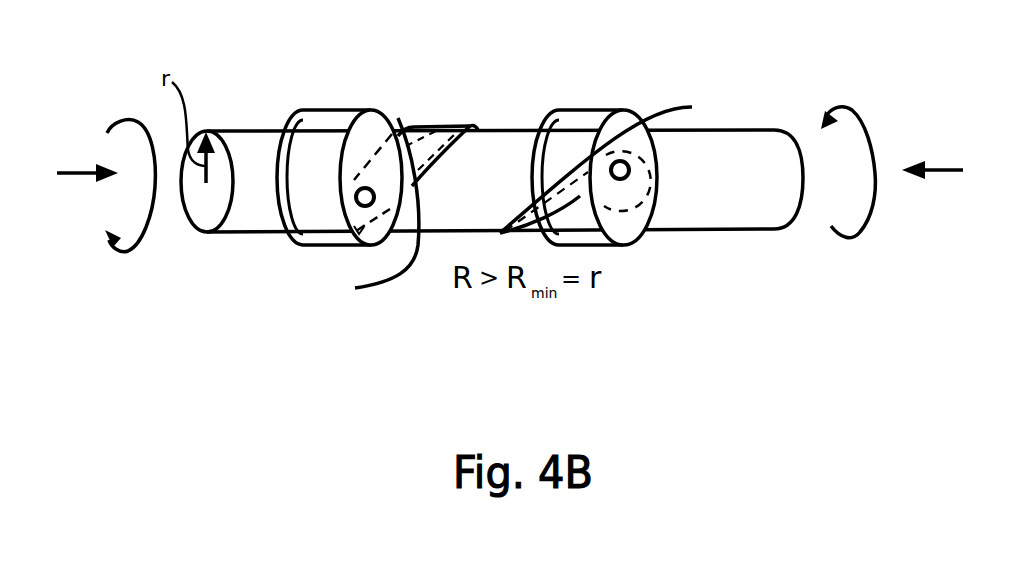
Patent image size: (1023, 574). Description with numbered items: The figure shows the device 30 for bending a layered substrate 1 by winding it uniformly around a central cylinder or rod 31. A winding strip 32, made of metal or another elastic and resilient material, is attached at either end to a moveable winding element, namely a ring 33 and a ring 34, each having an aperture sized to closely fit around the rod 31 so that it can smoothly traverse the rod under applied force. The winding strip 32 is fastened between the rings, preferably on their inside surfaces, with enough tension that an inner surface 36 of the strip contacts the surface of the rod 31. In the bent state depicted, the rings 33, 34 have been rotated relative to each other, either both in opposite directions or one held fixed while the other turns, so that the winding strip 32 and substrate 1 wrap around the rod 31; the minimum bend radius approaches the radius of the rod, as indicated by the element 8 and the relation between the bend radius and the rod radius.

The device 30 is at (784, 87).
The central cylinder (rod) 31 is at (743, 163).
The ring (moveable winding element) 33 is at (344, 129).
The ring (moveable winding element) 34 is at (610, 133).
The winding strip 32 is at (355, 215).
The inner surface of the winding strip 36 is at (400, 128).
The substrate 1 is at (449, 125).
The fiber path 8 is at (662, 110).